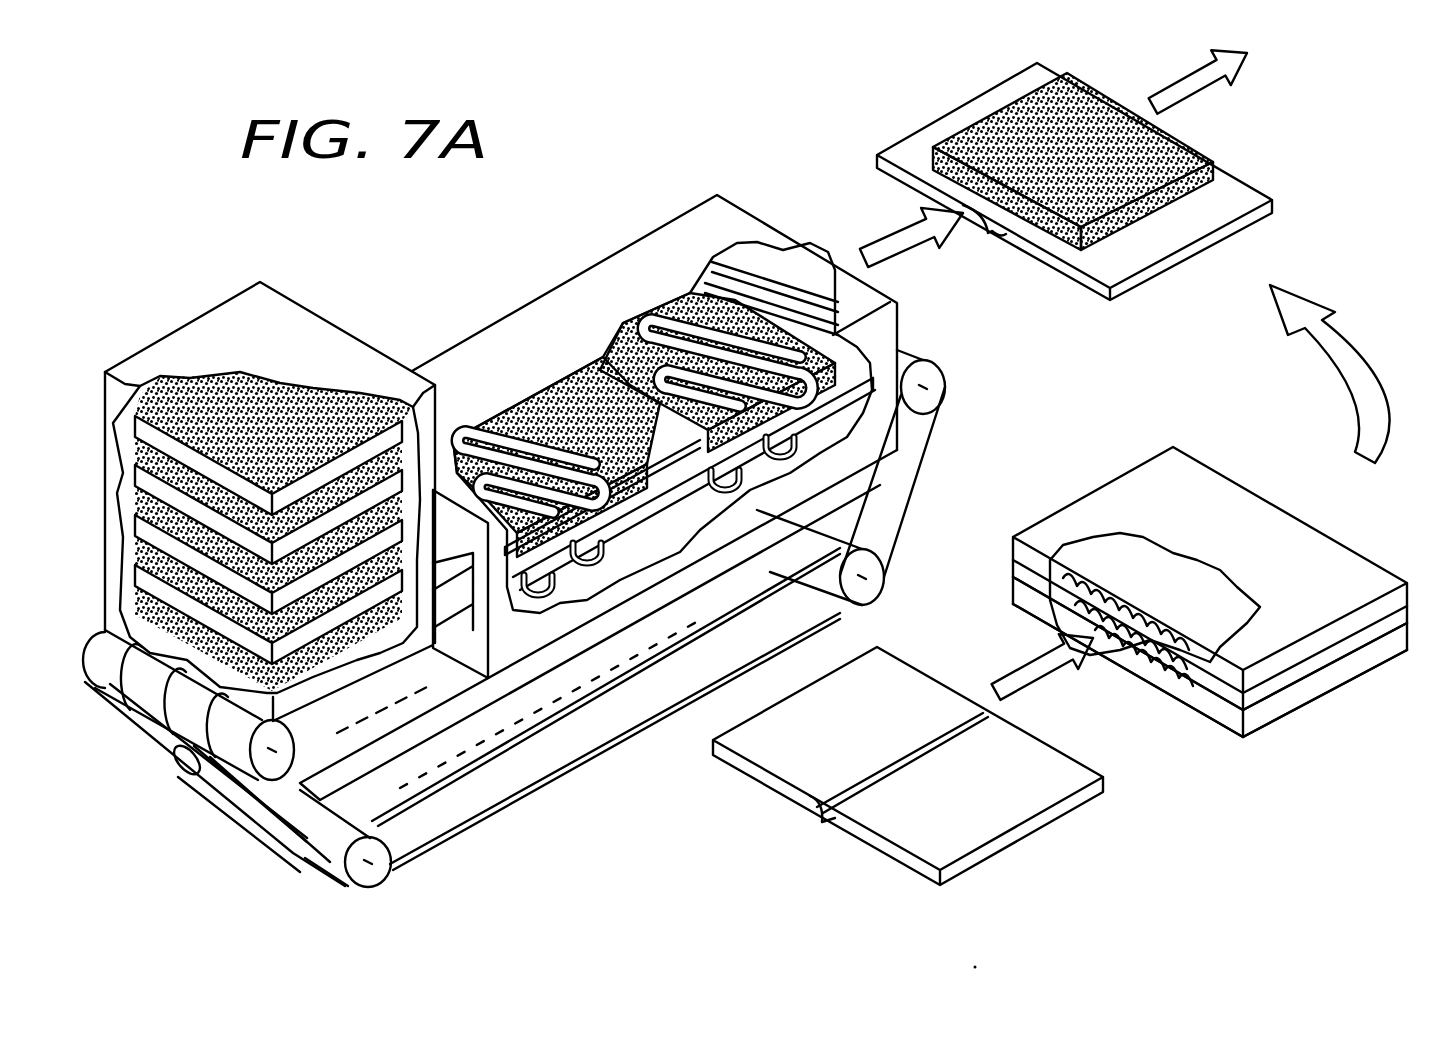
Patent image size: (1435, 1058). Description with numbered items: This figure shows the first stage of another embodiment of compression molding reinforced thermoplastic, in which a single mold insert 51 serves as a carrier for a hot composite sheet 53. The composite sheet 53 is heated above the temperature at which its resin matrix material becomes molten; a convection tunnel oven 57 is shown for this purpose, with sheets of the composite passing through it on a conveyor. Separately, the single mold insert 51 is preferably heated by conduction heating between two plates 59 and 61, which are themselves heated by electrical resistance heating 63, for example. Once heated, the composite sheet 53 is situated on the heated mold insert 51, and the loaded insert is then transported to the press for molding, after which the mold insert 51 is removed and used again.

The single mold insert 51 is at (1160, 265).
The composite sheet 53 is at (673, 312).
The convection tunnel oven 57 is at (445, 318).
The plate 59 is at (1027, 557).
The plate 61 is at (1257, 713).
The electrical resistance heating 63 is at (1163, 600).